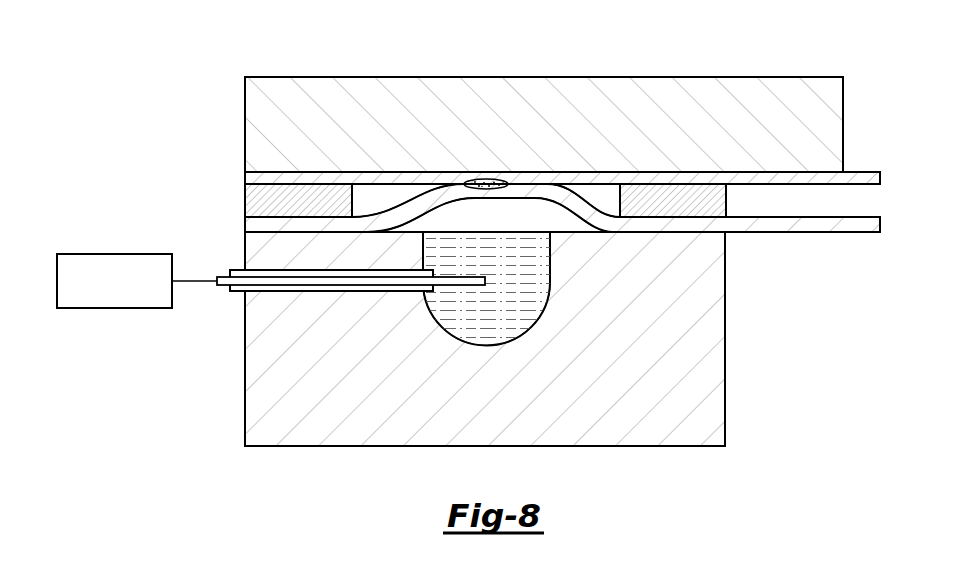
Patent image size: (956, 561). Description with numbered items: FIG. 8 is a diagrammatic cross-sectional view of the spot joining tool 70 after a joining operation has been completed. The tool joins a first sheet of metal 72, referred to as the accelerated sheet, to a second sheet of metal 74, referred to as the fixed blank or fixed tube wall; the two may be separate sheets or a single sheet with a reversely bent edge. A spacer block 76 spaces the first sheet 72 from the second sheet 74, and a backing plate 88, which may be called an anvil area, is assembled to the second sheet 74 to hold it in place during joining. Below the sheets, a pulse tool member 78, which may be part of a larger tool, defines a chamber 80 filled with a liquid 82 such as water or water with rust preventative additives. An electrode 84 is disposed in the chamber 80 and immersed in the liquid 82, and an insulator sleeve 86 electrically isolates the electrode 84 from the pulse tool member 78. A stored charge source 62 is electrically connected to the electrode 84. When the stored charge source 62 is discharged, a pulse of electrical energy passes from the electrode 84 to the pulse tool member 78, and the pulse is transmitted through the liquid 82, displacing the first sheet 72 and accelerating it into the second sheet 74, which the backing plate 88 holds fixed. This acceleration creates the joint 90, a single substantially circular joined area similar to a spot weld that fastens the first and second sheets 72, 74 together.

The stored charge source 62 is at (118, 253).
The spot joining tool 70 is at (188, 98).
The first sheet of metal 72 is at (855, 233).
The second sheet of metal 74 is at (862, 171).
The spacer block 76 is at (248, 201).
The pulse tool member 78 is at (270, 360).
The chamber 80 is at (476, 333).
The liquid 82 is at (532, 303).
The electrode 84 is at (353, 282).
The insulator sleeve 86 is at (259, 293).
The backing plate 88 is at (568, 87).
The joint 90 is at (486, 179).